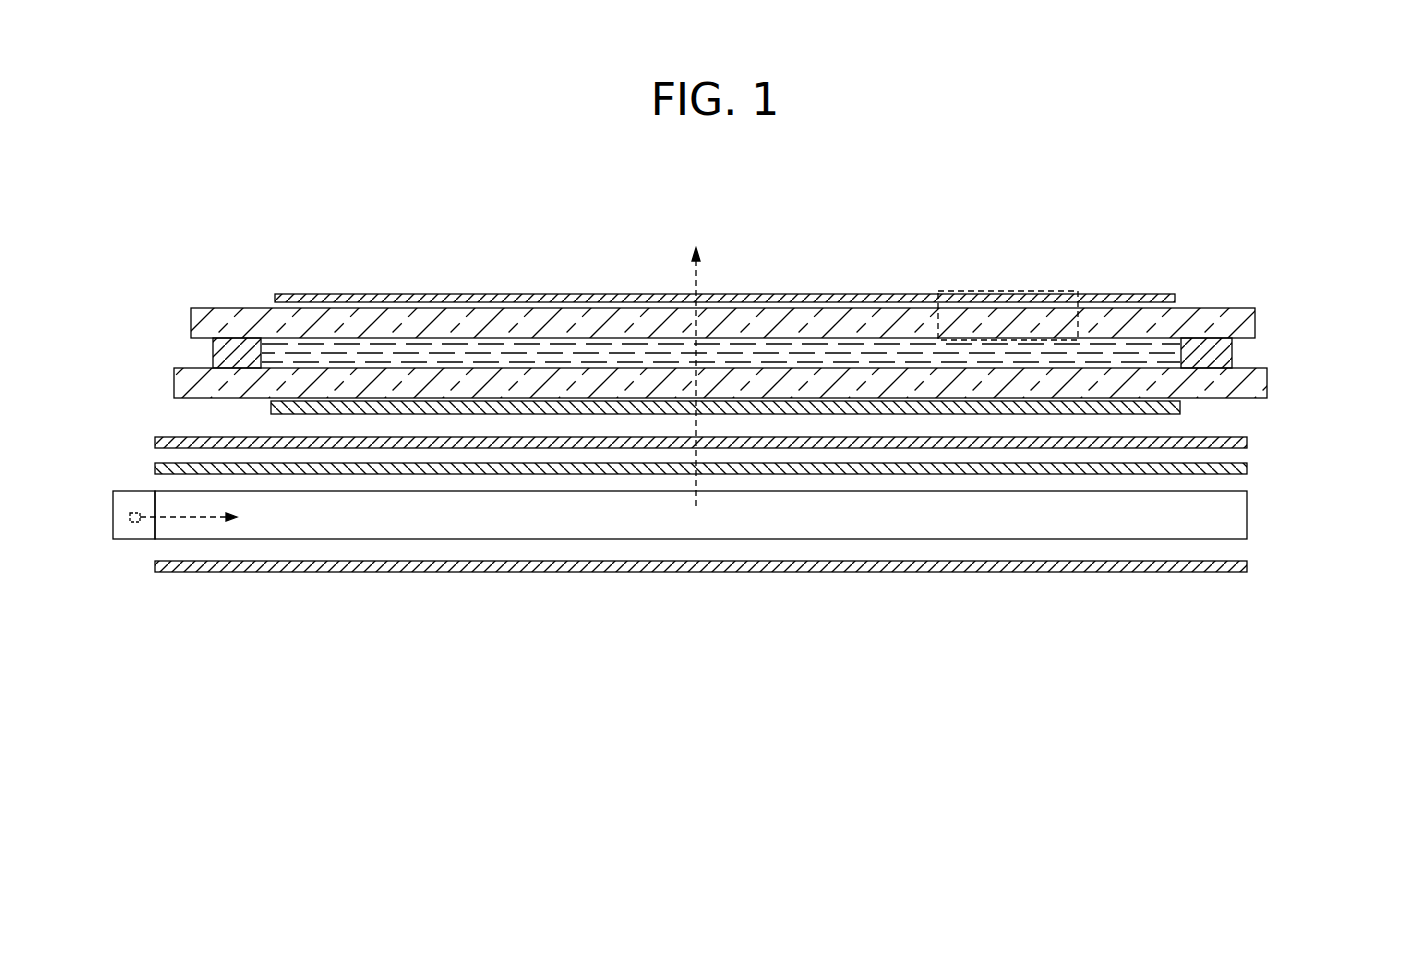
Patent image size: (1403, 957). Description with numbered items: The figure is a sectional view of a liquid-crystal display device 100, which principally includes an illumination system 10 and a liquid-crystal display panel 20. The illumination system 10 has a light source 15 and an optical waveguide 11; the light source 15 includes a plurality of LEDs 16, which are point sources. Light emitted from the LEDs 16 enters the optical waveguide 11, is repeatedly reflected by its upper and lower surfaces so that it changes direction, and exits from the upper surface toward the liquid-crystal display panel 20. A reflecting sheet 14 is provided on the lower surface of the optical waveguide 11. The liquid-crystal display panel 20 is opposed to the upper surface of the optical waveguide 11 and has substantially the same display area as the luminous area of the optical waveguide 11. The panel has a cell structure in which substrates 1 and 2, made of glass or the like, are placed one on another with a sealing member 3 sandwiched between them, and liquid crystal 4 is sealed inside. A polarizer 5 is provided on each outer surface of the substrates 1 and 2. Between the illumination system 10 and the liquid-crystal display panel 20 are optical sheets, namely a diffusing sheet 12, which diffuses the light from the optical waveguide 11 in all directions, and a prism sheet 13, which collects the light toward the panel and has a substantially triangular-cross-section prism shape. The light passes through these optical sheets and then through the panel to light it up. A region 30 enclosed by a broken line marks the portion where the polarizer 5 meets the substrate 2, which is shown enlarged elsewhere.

The liquid-crystal display device 100 is at (735, 161).
The liquid-crystal display panel 20 is at (1240, 300).
The substrate 1 is at (1245, 388).
The substrate 2 is at (1242, 325).
The sealing member 3 is at (1212, 357).
The liquid crystal 4 is at (264, 355).
The polarizer 5 is at (808, 413).
The region 30 is at (988, 291).
The illumination system 10 is at (1262, 508).
The optical waveguide 11 is at (1238, 518).
The diffusing sheet 12 is at (1240, 468).
The prism sheet 13 is at (1240, 443).
The reflecting sheet 14 is at (1240, 567).
The light source 15 is at (120, 500).
The LED 16 is at (130, 522).